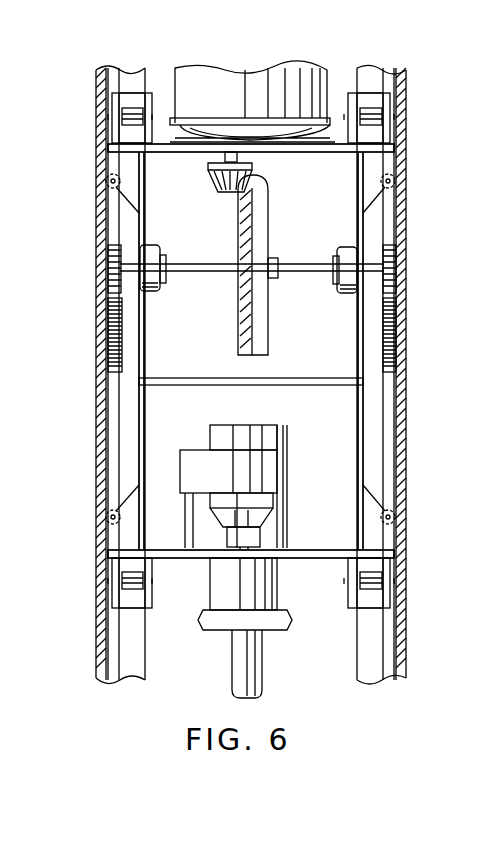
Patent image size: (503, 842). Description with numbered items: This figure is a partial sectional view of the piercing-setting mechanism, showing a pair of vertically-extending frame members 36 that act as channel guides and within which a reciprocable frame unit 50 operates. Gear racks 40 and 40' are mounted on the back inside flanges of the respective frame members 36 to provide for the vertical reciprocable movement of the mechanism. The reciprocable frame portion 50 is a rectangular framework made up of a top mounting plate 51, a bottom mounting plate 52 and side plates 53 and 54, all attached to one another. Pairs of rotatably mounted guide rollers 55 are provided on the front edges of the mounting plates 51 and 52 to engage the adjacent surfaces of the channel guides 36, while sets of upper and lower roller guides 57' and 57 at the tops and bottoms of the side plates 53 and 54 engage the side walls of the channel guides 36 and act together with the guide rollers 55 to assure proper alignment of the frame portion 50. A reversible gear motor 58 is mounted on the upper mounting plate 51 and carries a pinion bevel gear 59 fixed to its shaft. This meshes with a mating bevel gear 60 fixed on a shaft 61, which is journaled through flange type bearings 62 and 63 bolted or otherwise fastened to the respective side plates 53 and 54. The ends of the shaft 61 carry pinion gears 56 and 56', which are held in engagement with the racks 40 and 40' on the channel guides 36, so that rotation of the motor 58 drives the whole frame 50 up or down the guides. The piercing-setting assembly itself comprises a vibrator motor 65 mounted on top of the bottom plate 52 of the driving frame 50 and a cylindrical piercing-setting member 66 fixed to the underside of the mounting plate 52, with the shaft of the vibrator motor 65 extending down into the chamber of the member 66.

The frame member 36 is at (408, 471).
The gear rack 40 is at (88, 335).
The gear rack 40' is at (421, 335).
The reciprocable frame unit 50 is at (132, 407).
The top mounting plate 51 is at (193, 152).
The bottom mounting plate 52 is at (148, 550).
The side plate 53 is at (358, 343).
The side plate 54 is at (144, 353).
The guide roller 55 is at (131, 107).
The pinion gear 56 is at (418, 269).
The pinion gear 56' is at (83, 269).
The roller guide 57 is at (250, 504).
The roller guide 57' is at (246, 188).
The reversible gear motor 58 is at (258, 70).
The pinion bevel gear 59 is at (226, 195).
The bevel gear 60 is at (268, 226).
The shaft 61 is at (286, 266).
The flange type bearing 62 is at (341, 284).
The flange type bearing 63 is at (150, 287).
The vibrator motor 65 is at (288, 442).
The piercing-setting member 66 is at (232, 653).